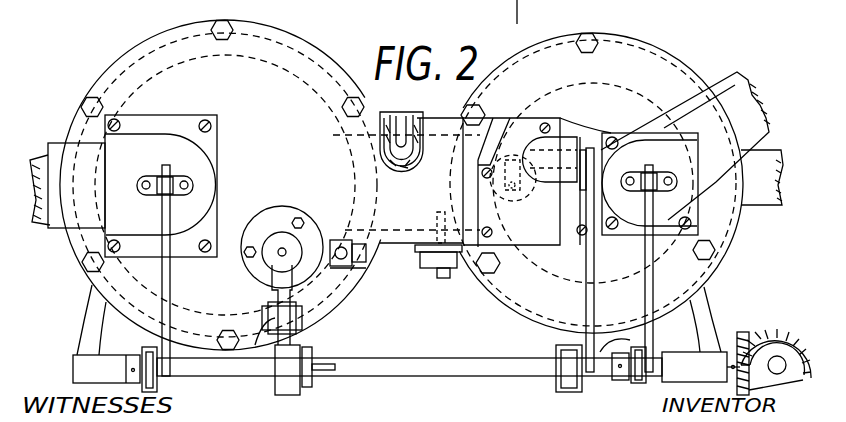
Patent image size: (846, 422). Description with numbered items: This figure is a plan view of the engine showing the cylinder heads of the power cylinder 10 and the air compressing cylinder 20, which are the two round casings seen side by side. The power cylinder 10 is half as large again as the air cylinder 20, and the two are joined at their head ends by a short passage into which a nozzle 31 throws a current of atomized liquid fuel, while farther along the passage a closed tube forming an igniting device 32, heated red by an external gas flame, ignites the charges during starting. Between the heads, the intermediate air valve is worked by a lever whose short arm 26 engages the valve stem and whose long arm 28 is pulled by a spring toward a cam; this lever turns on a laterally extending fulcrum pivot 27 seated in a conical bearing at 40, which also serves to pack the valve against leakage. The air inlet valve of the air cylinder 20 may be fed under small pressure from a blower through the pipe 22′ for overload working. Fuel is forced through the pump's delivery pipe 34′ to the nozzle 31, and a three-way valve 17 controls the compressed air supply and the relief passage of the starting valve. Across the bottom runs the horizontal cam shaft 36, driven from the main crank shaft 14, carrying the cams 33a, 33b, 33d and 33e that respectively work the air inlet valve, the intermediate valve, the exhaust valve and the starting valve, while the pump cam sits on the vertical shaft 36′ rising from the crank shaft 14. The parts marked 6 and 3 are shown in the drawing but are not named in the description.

The power cylinder 10 is at (188, 14).
The air compressing cylinder 20 is at (674, 64).
The pipe 22′ is at (740, 98).
The pivot 27 is at (563, 152).
The disc 6 is at (268, 228).
The nozzle 31 is at (436, 219).
The short arm 26 is at (530, 196).
The three-way valve 17 is at (347, 270).
The pump's delivery pipe 34′ is at (438, 276).
The long arm 28 is at (590, 282).
The main crank shaft 14 is at (762, 207).
The vertical shaft 36′ is at (779, 360).
The cam 33d is at (157, 388).
The cam 33e is at (292, 395).
The cam shaft 36 is at (435, 370).
The cam 33b is at (574, 392).
The cam 33a is at (642, 383).
The base 3 is at (514, 318).
The igniting device 32 is at (415, 100).
The conical seat 40 is at (536, 102).